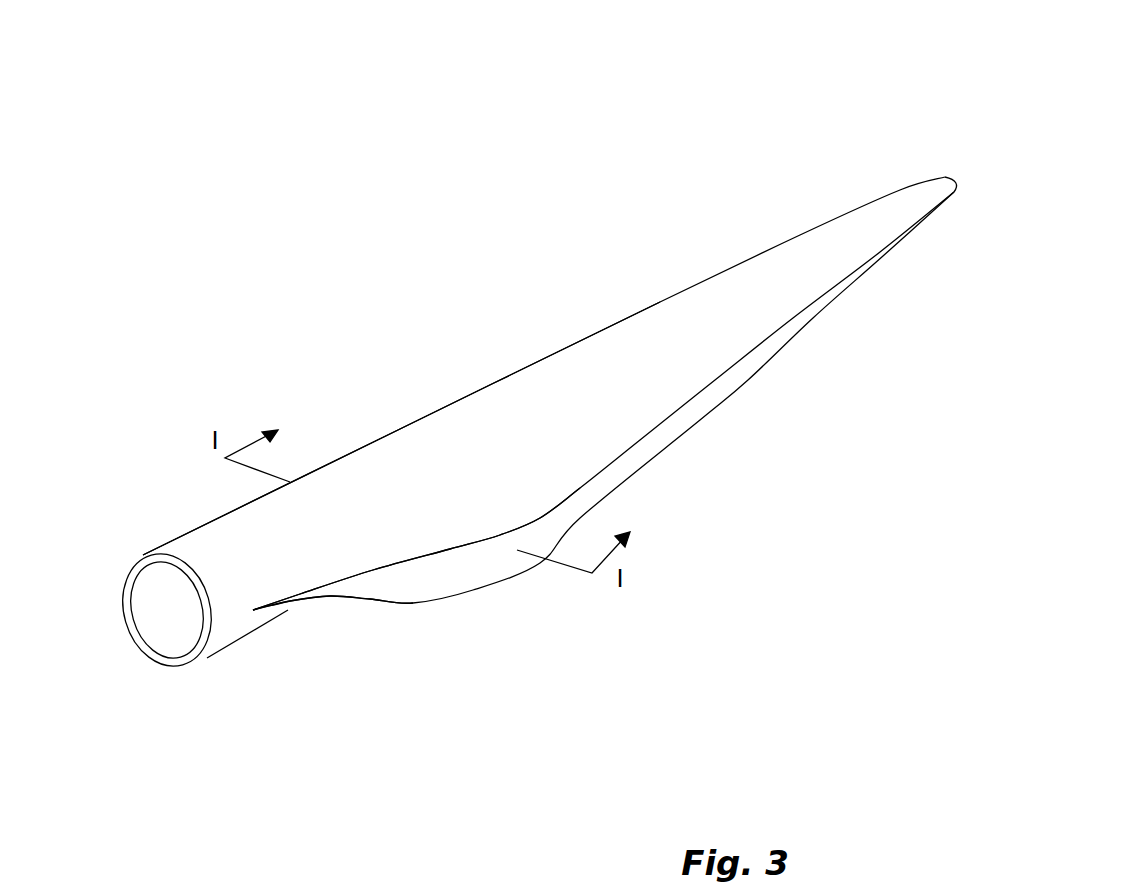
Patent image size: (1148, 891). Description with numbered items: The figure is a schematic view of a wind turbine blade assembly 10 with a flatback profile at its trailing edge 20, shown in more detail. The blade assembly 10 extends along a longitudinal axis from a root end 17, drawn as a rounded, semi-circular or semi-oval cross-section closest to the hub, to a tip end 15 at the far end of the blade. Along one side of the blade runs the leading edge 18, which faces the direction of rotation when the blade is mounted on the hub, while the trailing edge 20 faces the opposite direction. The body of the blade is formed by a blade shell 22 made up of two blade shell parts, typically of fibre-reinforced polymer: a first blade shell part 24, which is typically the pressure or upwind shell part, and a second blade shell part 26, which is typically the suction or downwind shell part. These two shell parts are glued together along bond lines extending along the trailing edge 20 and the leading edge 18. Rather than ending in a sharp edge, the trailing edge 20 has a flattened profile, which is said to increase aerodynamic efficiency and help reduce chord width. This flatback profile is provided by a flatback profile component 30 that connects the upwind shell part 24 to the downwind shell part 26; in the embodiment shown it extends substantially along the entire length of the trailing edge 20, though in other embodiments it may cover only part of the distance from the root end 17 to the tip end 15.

The wind turbine blade assembly 10 is at (413, 678).
The tip end 15 is at (950, 175).
The root end 17 is at (162, 615).
The leading edge 18 is at (445, 410).
The trailing edge 20 is at (680, 412).
The blade shell 22 is at (363, 498).
The first blade shell part 24 is at (628, 350).
The second blade shell part 26 is at (270, 613).
The flatback profile component 30 is at (623, 472).